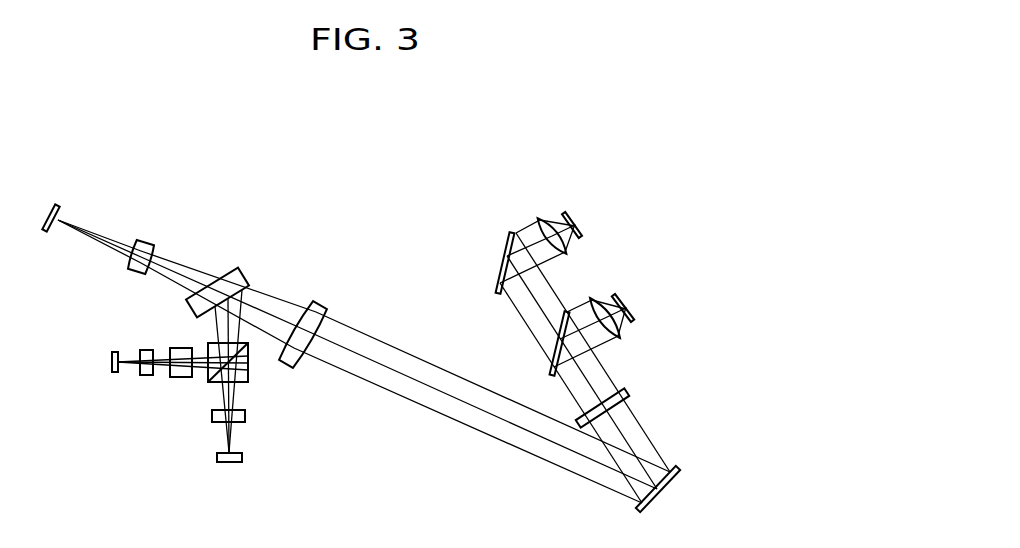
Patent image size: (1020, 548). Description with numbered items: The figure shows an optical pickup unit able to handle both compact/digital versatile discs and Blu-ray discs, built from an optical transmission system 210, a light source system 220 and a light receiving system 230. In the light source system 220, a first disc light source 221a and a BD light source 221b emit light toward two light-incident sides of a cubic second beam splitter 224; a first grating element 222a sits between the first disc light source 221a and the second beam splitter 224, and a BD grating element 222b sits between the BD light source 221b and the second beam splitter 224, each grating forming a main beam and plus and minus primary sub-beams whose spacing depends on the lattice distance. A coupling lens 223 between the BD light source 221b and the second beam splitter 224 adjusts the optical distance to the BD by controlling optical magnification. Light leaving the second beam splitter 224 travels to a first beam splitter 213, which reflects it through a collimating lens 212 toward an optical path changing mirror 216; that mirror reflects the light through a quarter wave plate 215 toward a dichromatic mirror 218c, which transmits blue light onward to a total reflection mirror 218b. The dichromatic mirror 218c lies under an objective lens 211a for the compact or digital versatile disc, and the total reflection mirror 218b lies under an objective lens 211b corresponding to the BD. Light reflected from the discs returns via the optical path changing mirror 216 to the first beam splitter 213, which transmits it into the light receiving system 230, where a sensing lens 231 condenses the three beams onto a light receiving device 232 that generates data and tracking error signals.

The optical transmission system 210 is at (569, 141).
The objective lens 211a is at (620, 336).
The objective lens 211b is at (540, 220).
The collimating lens 212 is at (318, 306).
The first beam splitter 213 is at (240, 279).
The quarter wave plate 215 is at (630, 393).
The optical path changing mirror 216 is at (677, 467).
The total reflection mirror 218b is at (501, 262).
The dichromatic mirror 218c is at (553, 372).
The light source system 220 is at (257, 478).
The CD/DVD light source 221a is at (242, 455).
The BD light source 221b is at (112, 373).
The CD/DVD grating element 222a is at (245, 412).
The BD grating element 222b is at (147, 376).
The coupling lens 223 is at (182, 378).
The second beam splitter 224 is at (212, 343).
The light receiving system 230 is at (168, 192).
The sensing lens 231 is at (145, 243).
The light receiving device 232 is at (56, 207).
The Blu-ray disc BD is at (568, 229).